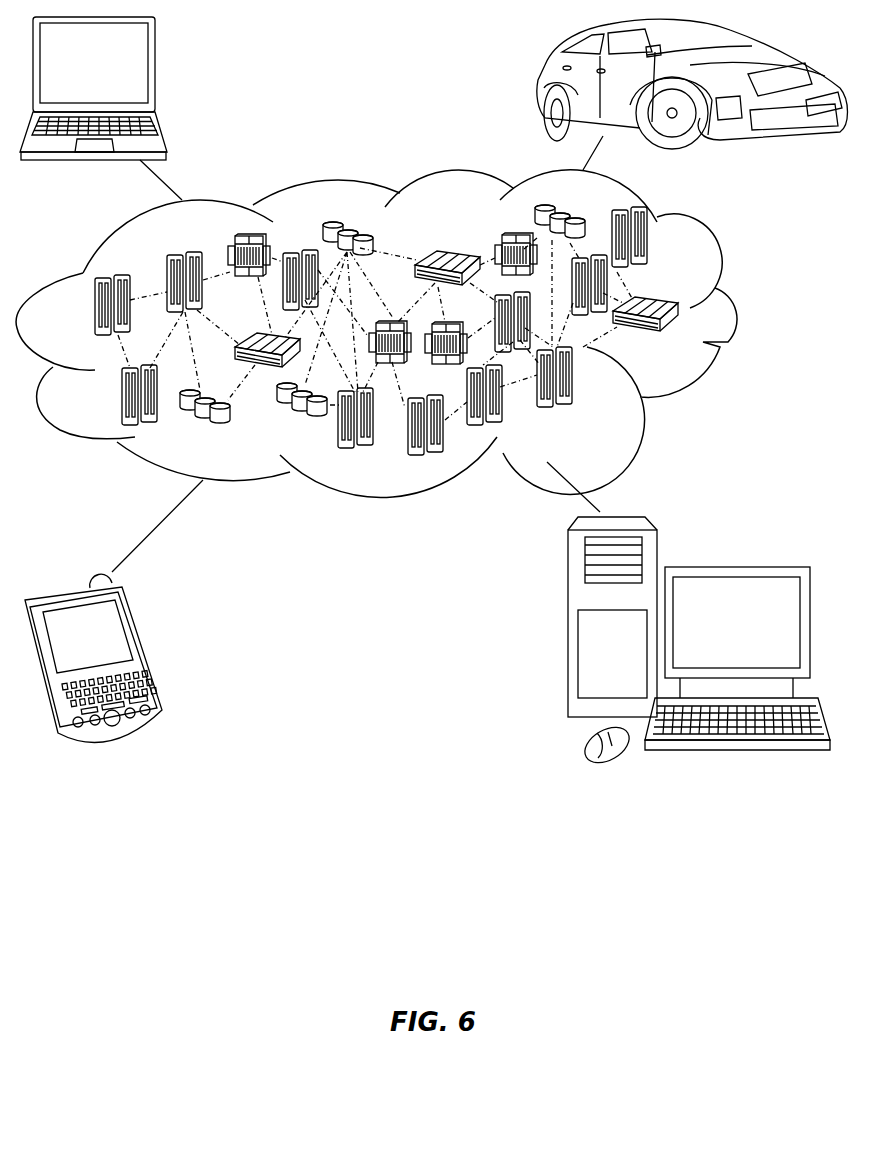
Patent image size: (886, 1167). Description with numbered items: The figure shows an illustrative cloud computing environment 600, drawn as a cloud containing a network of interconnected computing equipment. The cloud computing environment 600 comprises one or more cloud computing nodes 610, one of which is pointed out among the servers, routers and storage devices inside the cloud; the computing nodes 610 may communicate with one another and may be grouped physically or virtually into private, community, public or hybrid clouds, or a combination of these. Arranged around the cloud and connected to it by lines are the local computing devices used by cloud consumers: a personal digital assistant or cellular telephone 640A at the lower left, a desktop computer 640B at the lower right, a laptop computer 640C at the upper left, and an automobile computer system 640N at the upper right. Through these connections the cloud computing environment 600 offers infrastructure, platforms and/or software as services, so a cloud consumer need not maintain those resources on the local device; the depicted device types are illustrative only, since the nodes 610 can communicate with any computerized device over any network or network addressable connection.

The cloud computing environment 600 is at (733, 310).
The cloud computing node 610 is at (680, 323).
The personal digital assistant or cellular telephone 640A is at (147, 648).
The desktop computer 640B is at (735, 565).
The laptop computer 640C is at (155, 67).
The automobile computer system 640N is at (538, 85).